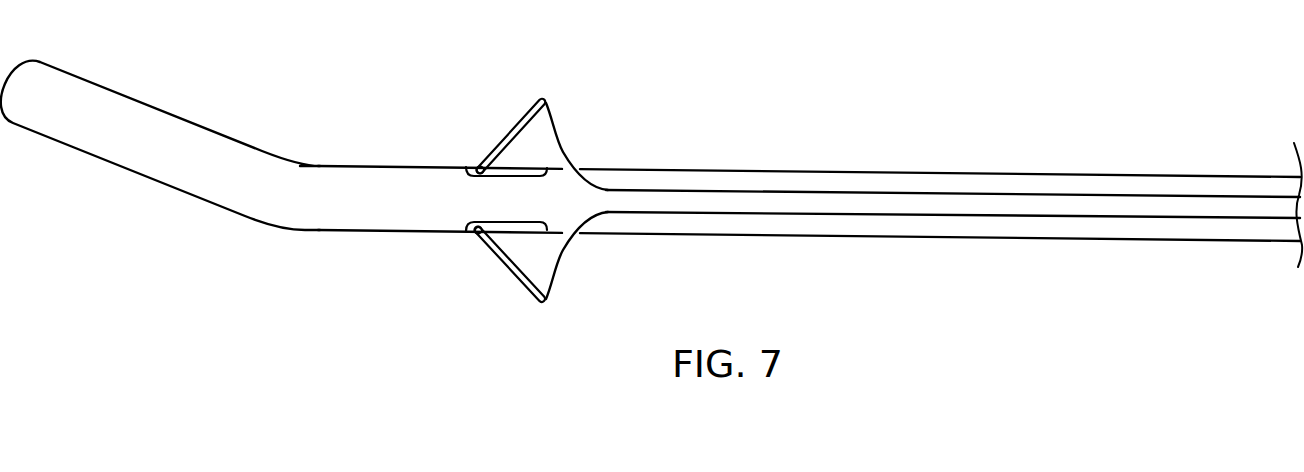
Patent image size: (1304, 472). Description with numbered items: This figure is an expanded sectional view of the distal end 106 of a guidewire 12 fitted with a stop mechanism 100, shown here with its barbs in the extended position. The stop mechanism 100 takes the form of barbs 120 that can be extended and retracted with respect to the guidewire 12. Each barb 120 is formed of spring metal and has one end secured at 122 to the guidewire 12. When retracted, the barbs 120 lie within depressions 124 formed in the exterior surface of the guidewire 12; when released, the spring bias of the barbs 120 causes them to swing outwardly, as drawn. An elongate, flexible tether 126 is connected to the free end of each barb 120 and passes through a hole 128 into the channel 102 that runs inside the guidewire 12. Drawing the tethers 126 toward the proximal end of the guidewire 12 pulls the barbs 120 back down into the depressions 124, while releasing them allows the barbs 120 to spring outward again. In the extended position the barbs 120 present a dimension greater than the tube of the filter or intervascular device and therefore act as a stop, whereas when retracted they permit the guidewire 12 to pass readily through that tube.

The stop mechanism 100 is at (636, 292).
The guidewire 12 is at (897, 171).
The channel 102 is at (987, 203).
The distal end 106 is at (149, 116).
The barbs 120 is at (522, 113).
The secured end 122 is at (478, 158).
The depressions 124 is at (498, 173).
The tether 126 is at (553, 103).
The hole 128 is at (578, 163).